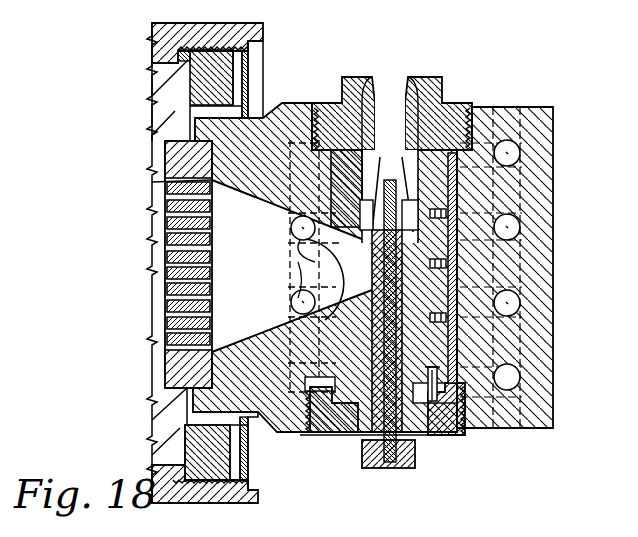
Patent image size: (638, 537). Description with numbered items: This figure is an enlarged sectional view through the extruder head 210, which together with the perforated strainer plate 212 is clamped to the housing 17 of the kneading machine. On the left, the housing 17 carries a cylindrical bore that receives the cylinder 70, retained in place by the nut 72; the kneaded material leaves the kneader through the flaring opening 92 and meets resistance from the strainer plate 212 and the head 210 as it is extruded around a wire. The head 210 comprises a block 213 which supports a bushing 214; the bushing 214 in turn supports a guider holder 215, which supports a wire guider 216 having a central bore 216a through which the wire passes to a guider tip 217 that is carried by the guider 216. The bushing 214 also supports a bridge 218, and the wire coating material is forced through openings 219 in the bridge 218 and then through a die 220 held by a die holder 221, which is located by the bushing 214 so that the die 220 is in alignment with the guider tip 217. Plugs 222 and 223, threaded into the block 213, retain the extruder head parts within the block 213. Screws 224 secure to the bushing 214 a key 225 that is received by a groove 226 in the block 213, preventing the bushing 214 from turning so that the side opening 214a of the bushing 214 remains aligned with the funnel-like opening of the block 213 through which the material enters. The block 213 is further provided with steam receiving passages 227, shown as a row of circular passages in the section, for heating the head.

The housing 17 is at (152, 37).
The cylinder 70 is at (152, 82).
The nut 72 is at (230, 71).
The flaring opening 92 is at (152, 210).
The strainer plate 212 is at (165, 262).
The block 213 is at (272, 184).
The bushing 214 is at (337, 348).
The side opening 214a is at (299, 276).
The guider holder 215 is at (347, 434).
The wire guider 216 is at (365, 462).
The central bore 216a is at (390, 468).
The guider tip 217 is at (392, 152).
The bridge 218 is at (300, 246).
The openings 219 is at (383, 236).
The die 220 is at (413, 175).
The die holder 221 is at (442, 176).
The plug 222 is at (322, 433).
The plug 223 is at (326, 106).
The screws 224 is at (458, 210).
The key 225 is at (458, 250).
The groove 226 is at (460, 338).
The steam receiving passages 227 is at (508, 153).
The extruder head 210 is at (532, 491).